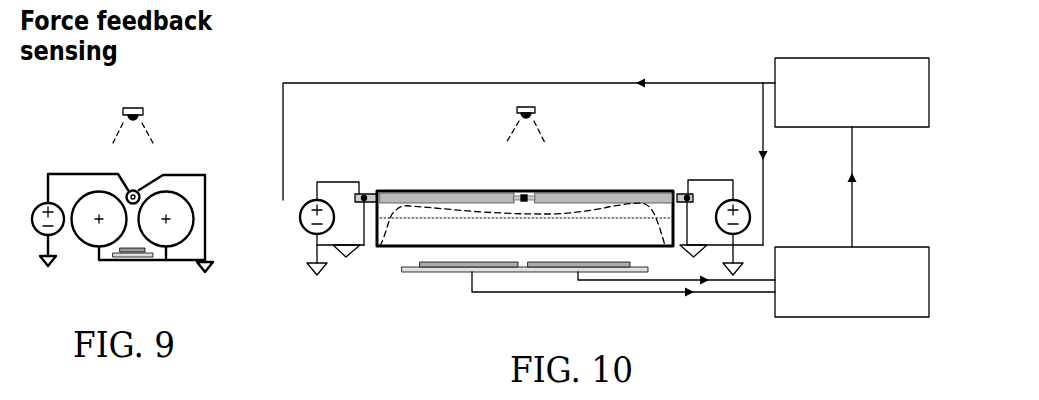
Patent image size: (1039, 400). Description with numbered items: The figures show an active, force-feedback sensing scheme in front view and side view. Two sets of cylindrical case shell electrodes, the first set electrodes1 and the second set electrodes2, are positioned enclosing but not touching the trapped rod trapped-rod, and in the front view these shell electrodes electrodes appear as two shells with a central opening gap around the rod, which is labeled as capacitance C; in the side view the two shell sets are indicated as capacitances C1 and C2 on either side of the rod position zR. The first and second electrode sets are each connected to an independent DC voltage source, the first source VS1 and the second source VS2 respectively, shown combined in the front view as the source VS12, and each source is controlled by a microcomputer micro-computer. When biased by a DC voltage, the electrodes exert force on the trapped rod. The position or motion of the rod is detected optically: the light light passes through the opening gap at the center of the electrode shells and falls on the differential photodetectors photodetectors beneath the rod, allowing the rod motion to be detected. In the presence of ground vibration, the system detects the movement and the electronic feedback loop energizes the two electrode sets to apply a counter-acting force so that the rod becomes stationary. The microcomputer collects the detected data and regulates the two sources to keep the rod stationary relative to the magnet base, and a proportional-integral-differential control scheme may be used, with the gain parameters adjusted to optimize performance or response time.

In FIG. 9, the element light is at (127, 114).
In FIG. 10, the element light is at (511, 122).
In FIG. 9, the DC voltage sources VS1,2 VS12 is at (69, 220).
In FIG. 9, the element electrodes is at (140, 190).
In FIG. 9, the capacitance C / trapped rod C is at (123, 176).
In FIG. 9, the differential photodetectors is at (125, 258).
In FIG. 10, the differential photodetectors is at (453, 267).
In FIG. 10, the microcomputer micro-computer is at (852, 92).
In FIG. 10, the DC voltage source VS1 is at (318, 228).
In FIG. 10, the DC voltage source VS2 is at (749, 237).
In FIG. 10, the electrodes #1 electrodes1 is at (368, 188).
In FIG. 10, the electrodes #2 electrodes2 is at (683, 188).
In FIG. 10, the capacitance C1 electrode plate C1 is at (447, 183).
In FIG. 10, the capacitance C2 electrode plate C2 is at (603, 183).
In FIG. 10, the rod position zR is at (524, 193).
In FIG. 10, the trapped rod trapped-rod is at (522, 203).